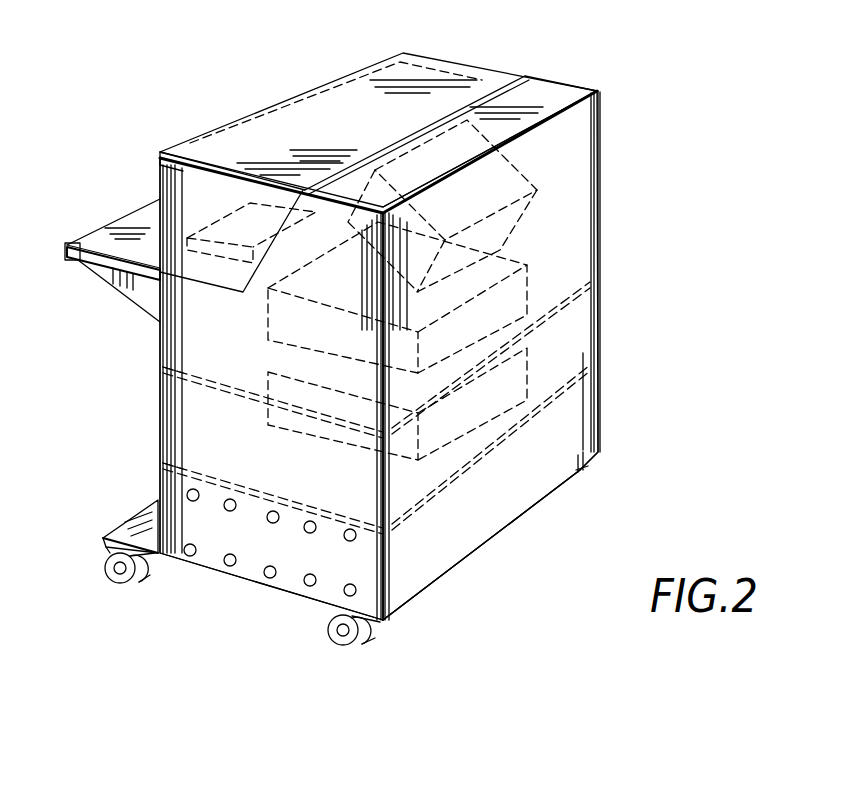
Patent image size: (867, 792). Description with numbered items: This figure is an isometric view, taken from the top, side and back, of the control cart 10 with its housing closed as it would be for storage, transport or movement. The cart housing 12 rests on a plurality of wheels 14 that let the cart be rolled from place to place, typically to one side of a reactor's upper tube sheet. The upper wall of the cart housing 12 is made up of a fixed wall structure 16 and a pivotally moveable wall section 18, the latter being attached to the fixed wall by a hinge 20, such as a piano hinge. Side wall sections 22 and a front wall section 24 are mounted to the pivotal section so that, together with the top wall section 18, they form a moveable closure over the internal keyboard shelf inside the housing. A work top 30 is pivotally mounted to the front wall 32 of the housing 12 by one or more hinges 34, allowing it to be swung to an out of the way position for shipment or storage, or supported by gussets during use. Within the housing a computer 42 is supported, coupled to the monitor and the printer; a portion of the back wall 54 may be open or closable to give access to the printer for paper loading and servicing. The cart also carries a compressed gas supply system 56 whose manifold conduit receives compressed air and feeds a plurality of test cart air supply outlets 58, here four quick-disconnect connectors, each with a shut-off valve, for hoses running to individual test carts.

The control cart 10 is at (283, 52).
The cart housing 12 is at (600, 120).
The wheels 14 is at (360, 647).
The fixed wall structure 16 is at (550, 83).
The pivotally moveable wall section 18 is at (363, 85).
The hinge 20 is at (476, 87).
The side wall sections 22 is at (190, 199).
The front wall section 24 is at (160, 190).
The work top 30 is at (107, 241).
The front wall 32 is at (160, 393).
The hinges 34 is at (160, 273).
The computer 42 is at (583, 208).
The back wall 54 is at (590, 312).
The compressed gas supply system 56 is at (484, 520).
The test cart air supply outlets 58 is at (228, 566).